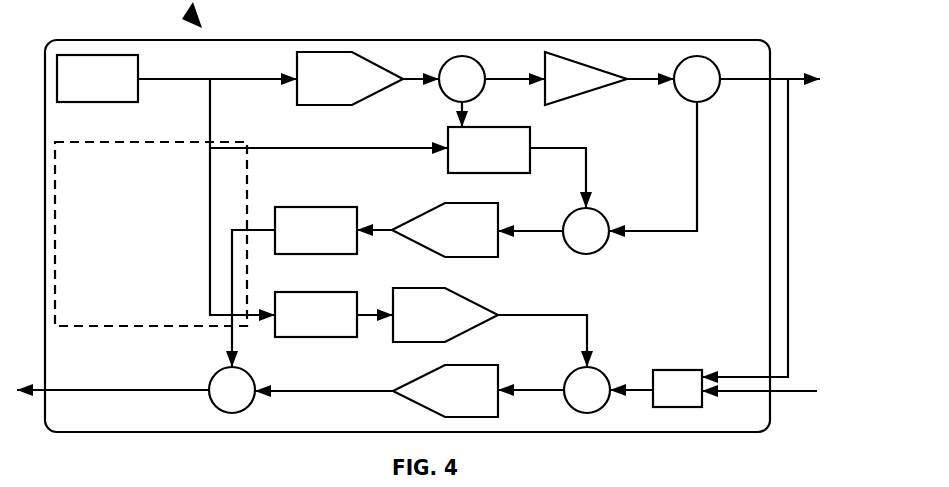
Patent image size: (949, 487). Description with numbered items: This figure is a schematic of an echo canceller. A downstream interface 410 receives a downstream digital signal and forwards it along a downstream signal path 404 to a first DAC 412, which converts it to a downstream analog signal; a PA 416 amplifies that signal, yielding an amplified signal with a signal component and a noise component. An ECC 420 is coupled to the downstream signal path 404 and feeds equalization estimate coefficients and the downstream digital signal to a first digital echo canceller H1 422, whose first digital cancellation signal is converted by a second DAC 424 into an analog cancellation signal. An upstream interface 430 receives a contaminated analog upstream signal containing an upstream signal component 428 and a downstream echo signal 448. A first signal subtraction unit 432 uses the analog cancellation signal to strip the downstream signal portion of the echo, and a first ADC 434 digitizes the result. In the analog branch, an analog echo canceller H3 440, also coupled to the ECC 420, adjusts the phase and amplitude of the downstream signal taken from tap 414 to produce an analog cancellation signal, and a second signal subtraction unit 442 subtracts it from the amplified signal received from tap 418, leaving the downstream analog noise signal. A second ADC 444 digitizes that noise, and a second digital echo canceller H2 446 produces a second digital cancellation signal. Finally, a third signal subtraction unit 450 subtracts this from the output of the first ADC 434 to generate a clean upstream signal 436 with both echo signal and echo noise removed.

The downstream interface 410 is at (89, 55).
The downstream signal path 404 is at (204, 78).
The first DAC (DAC1) 412 is at (321, 52).
The tap 414 is at (459, 56).
The PA 416 is at (555, 53).
The tap 418 is at (694, 57).
The analog echo canceller (H3) 440 is at (506, 127).
The ECC 420 is at (160, 142).
The second digital echo canceller (H2) 446 is at (303, 207).
The second ADC (ADC2) 444 is at (424, 213).
The second signal subtraction unit (S2) 442 is at (565, 216).
The first digital echo canceller (H1) 422 is at (316, 292).
The second DAC (DAC2) 424 is at (411, 288).
The first ADC (ADC1) 434 is at (425, 375).
The first signal subtraction unit (S1) 432 is at (566, 405).
The upstream interface 430 is at (665, 370).
The downstream echo signal 448 is at (726, 377).
The upstream signal component 428 is at (797, 394).
The third signal subtraction unit (S3) 450 is at (212, 403).
The clean upstream signal 436 is at (95, 389).